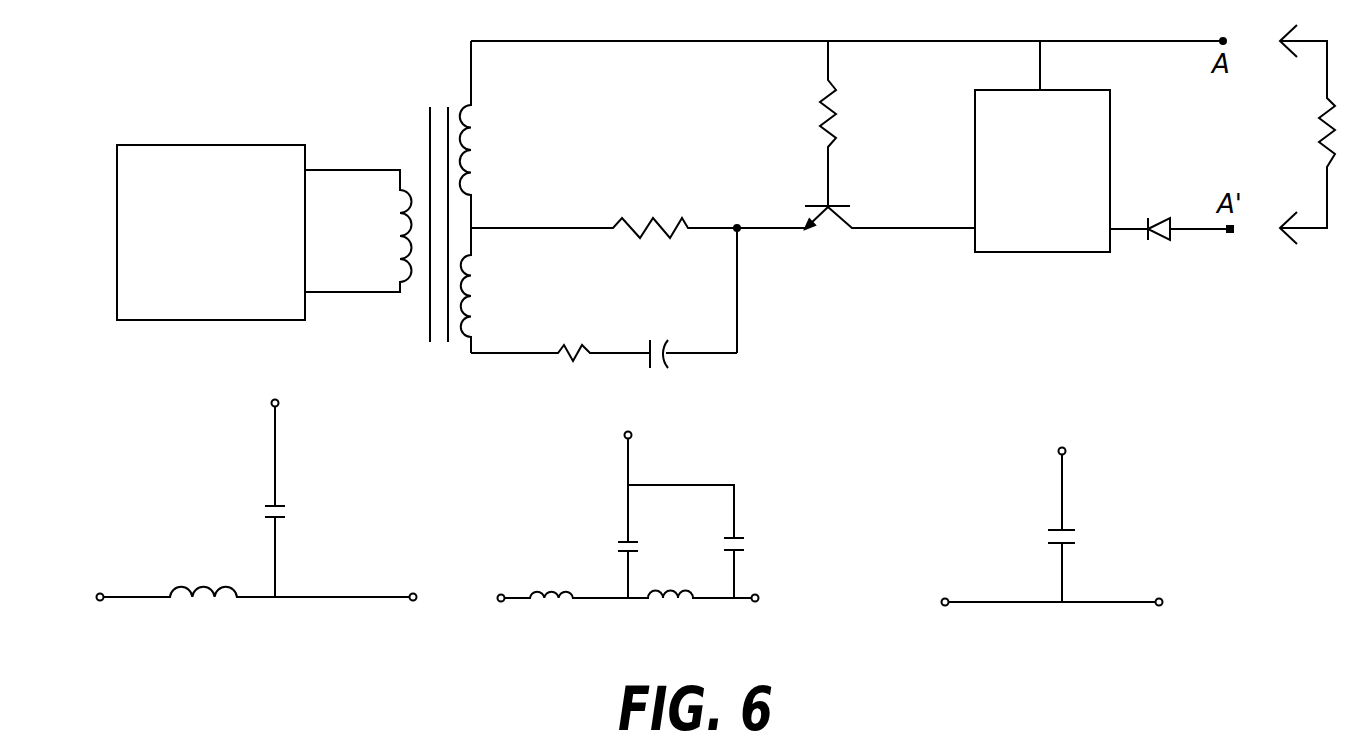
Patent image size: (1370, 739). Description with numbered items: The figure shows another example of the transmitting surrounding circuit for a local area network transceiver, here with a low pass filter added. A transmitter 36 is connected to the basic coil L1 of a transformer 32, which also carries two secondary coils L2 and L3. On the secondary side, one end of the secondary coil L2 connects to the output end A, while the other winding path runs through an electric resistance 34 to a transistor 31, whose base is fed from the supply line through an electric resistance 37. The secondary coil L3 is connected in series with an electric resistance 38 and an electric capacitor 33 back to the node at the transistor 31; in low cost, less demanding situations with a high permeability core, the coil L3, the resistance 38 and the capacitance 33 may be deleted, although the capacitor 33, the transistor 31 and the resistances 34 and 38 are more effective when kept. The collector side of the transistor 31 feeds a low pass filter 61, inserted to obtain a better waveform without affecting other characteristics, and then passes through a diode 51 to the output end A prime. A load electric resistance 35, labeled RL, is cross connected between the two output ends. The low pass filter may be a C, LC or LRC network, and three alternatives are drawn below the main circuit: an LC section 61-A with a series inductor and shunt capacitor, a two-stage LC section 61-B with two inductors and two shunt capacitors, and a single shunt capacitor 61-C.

The transmitter 36 is at (211, 219).
The transformer 32 is at (417, 220).
The basic coil L1 is at (358, 231).
The secondary coil L2 is at (494, 134).
The secondary coil L3 is at (495, 290).
The electric resistance 34 is at (604, 213).
The electric resistance 38 is at (560, 372).
The electric capacitor 33 is at (692, 337).
The electric resistance 37 is at (847, 123).
The transistor 31 is at (856, 232).
The low pass filter 61 is at (1042, 167).
The diode 51 is at (1170, 215).
The load electric resistance 35 is at (1302, 134).
The load resistance RL is at (1355, 139).
The low pass filter embodiment 61-A is at (257, 524).
The low pass filter embodiment 61-B is at (628, 542).
The low pass filter embodiment 61-C is at (1052, 549).